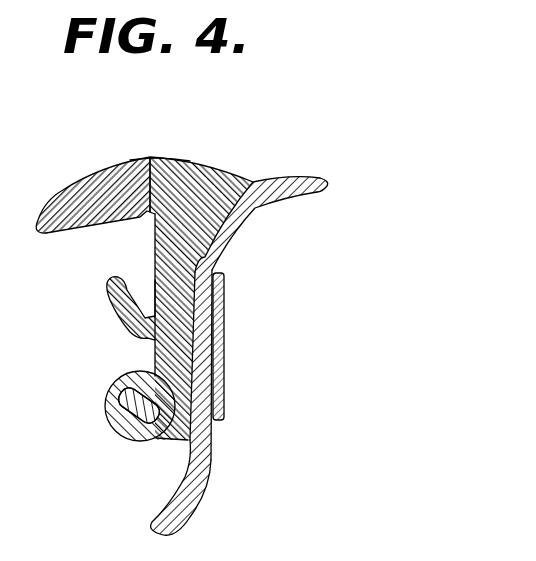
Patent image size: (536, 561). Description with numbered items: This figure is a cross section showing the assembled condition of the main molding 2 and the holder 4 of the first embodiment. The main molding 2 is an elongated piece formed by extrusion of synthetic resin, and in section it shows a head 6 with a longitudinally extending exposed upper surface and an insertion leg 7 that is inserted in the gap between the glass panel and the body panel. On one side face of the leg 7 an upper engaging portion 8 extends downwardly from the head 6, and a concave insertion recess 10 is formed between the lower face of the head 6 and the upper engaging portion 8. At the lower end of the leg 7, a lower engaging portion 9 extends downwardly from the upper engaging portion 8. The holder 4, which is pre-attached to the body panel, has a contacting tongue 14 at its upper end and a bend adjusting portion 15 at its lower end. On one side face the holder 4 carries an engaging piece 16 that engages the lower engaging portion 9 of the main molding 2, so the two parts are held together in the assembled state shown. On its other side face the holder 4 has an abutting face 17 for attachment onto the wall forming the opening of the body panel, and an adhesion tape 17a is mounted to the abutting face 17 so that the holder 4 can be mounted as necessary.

The main molding 2 is at (80, 178).
The holder 4 is at (284, 181).
The head 6 is at (179, 168).
The insertion leg 7 is at (180, 283).
The upper engaging portion 8 is at (104, 295).
The lower engaging portion 9 is at (120, 398).
The insertion recess 10 is at (140, 307).
The contacting tongue 14 is at (323, 190).
The bend adjusting portion 15 is at (192, 510).
The engaging piece 16 is at (122, 432).
The abutting face 17 is at (213, 427).
The adhesion tape 17a is at (224, 357).